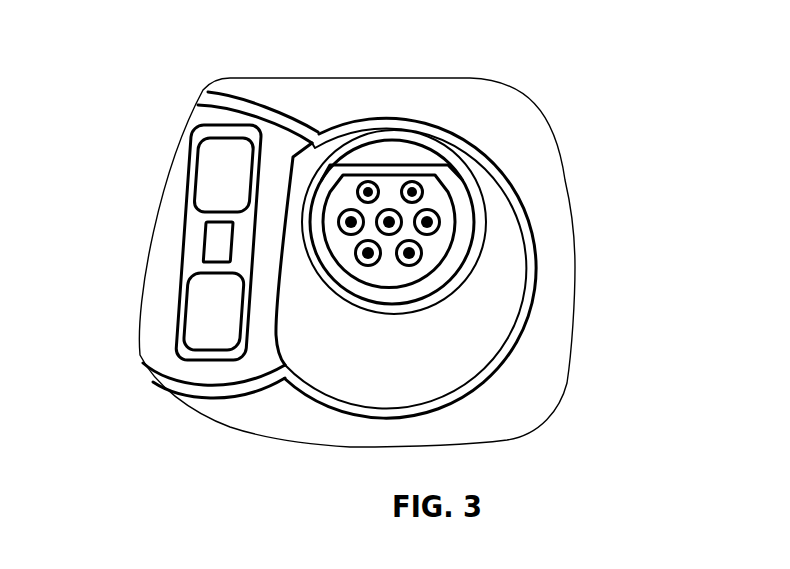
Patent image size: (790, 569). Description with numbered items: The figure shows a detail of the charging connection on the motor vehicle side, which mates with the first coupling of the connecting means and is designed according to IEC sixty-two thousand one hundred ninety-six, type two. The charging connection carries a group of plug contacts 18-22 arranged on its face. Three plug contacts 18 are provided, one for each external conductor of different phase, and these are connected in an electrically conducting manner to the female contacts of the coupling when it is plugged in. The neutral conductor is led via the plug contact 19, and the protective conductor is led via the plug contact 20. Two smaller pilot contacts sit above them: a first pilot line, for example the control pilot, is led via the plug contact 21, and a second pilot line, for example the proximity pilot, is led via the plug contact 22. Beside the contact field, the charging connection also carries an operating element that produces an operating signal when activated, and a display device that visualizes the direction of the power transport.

The plug contact 18 is at (398, 259).
The plug contact 19 is at (439, 220).
The plug contact 20 is at (388, 210).
The plug contact 21 is at (414, 182).
The plug contact 22 is at (364, 182).